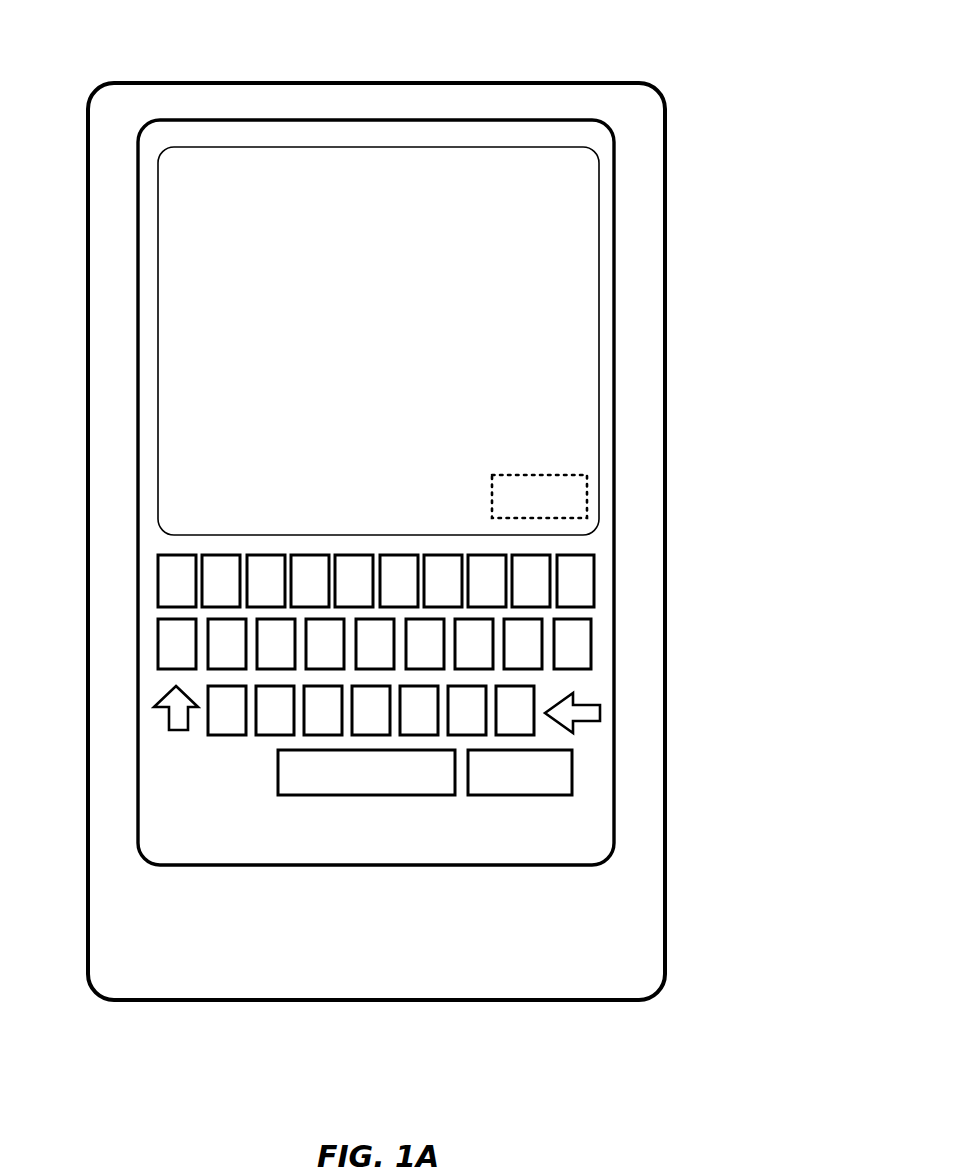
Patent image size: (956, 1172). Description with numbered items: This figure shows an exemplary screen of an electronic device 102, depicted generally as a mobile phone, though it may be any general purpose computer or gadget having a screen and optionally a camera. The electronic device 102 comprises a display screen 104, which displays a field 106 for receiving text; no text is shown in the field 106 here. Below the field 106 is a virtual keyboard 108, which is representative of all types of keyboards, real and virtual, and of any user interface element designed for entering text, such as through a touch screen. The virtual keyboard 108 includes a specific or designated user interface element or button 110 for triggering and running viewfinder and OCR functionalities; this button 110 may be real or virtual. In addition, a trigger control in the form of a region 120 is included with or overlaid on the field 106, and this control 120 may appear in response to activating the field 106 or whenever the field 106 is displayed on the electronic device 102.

The electronic device 102 is at (578, 83).
The display screen 104 is at (582, 137).
The field 106 is at (533, 212).
The virtual keyboard 108 is at (131, 813).
The button 110 is at (560, 772).
The region 120 is at (582, 500).